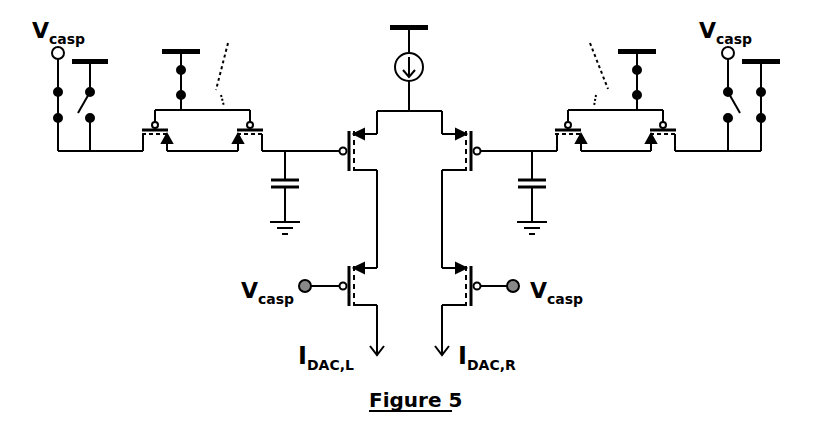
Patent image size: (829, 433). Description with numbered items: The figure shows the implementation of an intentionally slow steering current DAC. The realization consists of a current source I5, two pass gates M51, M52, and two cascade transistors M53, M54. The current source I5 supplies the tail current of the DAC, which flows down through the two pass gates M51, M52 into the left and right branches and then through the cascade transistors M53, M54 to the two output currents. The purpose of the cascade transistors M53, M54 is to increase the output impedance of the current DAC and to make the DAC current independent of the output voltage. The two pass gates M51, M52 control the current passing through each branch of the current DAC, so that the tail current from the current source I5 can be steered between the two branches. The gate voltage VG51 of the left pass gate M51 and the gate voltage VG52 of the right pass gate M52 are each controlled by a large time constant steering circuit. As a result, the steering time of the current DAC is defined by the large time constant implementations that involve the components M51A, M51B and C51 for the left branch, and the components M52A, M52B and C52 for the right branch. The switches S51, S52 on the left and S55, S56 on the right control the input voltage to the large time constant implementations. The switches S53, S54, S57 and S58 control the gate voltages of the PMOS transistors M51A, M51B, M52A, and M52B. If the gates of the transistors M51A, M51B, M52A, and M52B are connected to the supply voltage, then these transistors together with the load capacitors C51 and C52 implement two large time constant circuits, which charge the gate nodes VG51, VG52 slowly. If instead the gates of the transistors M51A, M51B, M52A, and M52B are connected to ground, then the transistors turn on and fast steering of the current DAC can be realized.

The switch S51 is at (43, 99).
The switch S52 is at (99, 105).
The switch S53 is at (173, 79).
The switch S54 is at (240, 74).
The switch S55 is at (770, 105).
The switch S56 is at (715, 99).
The switch S57 is at (647, 79).
The switch S58 is at (583, 74).
The PMOS transistor M51A is at (154, 149).
The PMOS transistor M51B is at (245, 149).
The PMOS transistor M52A is at (570, 149).
The PMOS transistor M52B is at (662, 149).
The pass gate M51 is at (359, 198).
The pass gate M52 is at (461, 198).
The cascade transistor M53 is at (341, 309).
The cascade transistor M54 is at (477, 309).
The load capacitor C51 is at (300, 207).
The load capacitor C52 is at (520, 207).
The current source I5 is at (397, 68).
The gate voltage node VG51 is at (305, 154).
The gate voltage node VG52 is at (513, 154).